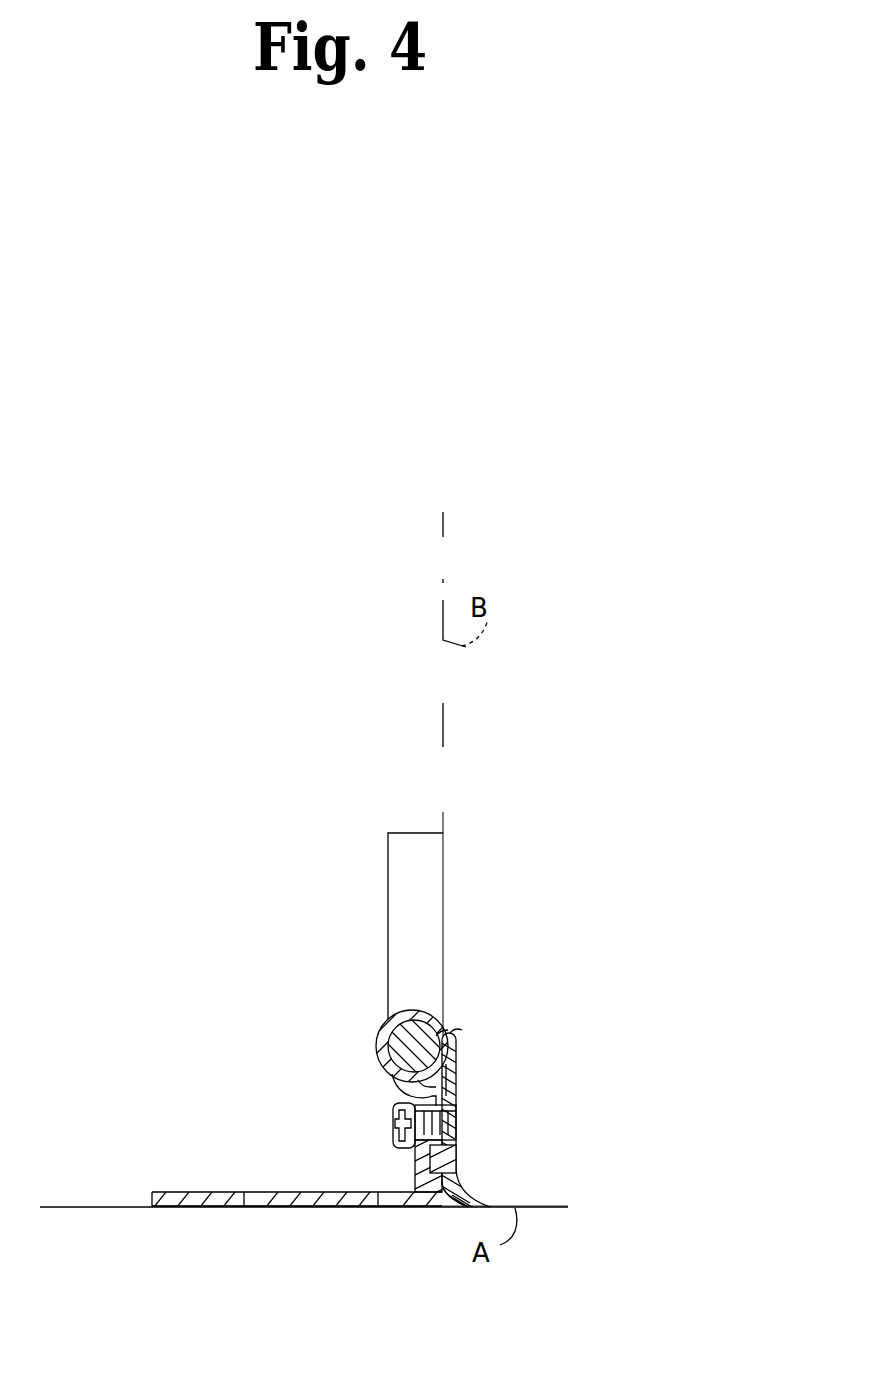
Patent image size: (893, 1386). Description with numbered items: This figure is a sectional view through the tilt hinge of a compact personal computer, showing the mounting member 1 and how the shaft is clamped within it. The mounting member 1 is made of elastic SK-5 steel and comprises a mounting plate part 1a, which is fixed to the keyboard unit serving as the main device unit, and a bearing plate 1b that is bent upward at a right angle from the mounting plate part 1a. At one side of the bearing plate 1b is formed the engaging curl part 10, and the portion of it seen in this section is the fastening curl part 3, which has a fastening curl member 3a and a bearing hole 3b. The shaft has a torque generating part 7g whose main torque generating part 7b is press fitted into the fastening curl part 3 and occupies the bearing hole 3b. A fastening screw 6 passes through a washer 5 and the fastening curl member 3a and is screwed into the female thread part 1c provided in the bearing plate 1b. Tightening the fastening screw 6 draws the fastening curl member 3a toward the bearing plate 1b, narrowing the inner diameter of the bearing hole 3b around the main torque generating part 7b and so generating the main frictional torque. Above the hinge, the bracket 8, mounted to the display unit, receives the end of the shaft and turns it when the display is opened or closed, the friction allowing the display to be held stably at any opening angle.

The mounting member 1 is at (290, 1212).
The mounting plate part 1a is at (227, 1192).
The bearing plate 1b is at (447, 1194).
The female thread part 1c is at (446, 1138).
The fastening curl part 3 is at (451, 1036).
The fastening curl member 3a is at (437, 1154).
The bearing hole 3b is at (444, 1029).
The washer 5 is at (420, 1172).
The fastening screw 6 is at (393, 1125).
The main torque generating part 7b is at (396, 1027).
The torque generating part 7g is at (454, 1029).
The bracket 8 is at (390, 877).
The engaging curl part 10 is at (377, 1050).